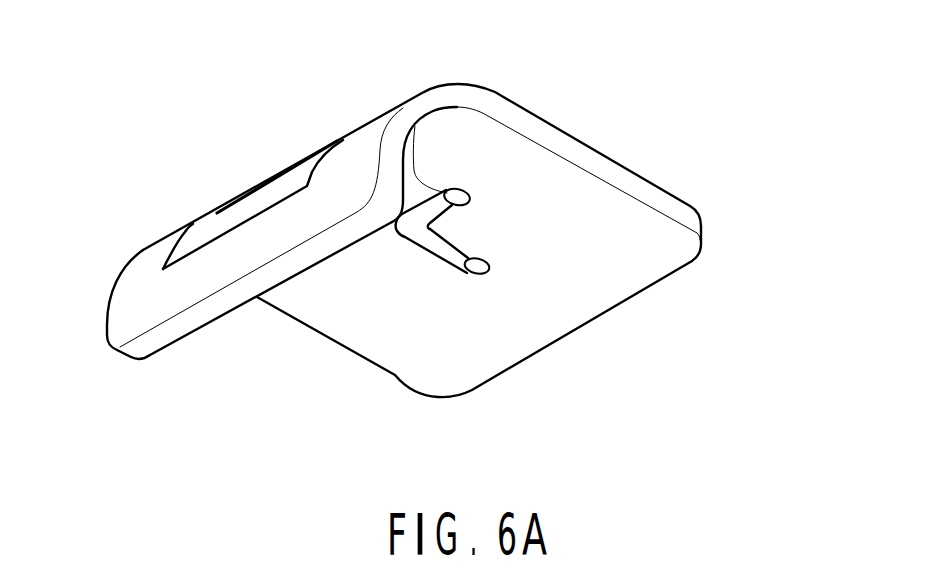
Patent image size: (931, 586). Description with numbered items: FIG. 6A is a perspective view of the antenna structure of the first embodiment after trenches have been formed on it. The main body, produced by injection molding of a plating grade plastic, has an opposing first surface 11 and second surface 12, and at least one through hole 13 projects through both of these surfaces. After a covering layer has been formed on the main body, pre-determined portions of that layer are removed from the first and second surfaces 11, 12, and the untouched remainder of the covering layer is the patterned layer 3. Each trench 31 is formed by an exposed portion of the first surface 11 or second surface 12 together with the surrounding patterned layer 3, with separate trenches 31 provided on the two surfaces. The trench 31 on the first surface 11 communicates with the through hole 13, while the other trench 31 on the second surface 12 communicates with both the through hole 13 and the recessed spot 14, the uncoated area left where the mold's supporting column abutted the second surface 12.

The patterned layer 3 is at (635, 177).
The trench 31 is at (415, 126).
The first surface 11 is at (258, 207).
The second surface 12 is at (430, 245).
The through hole 13 is at (473, 193).
The recessed spot 14 is at (476, 275).